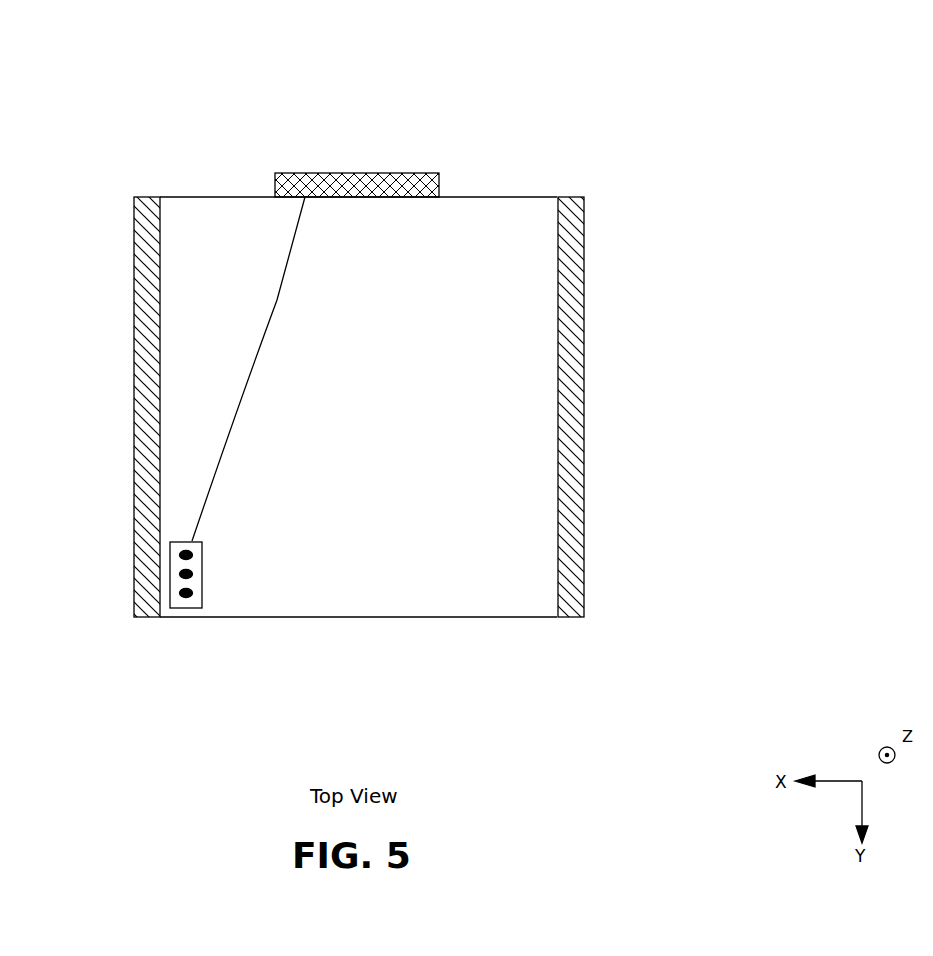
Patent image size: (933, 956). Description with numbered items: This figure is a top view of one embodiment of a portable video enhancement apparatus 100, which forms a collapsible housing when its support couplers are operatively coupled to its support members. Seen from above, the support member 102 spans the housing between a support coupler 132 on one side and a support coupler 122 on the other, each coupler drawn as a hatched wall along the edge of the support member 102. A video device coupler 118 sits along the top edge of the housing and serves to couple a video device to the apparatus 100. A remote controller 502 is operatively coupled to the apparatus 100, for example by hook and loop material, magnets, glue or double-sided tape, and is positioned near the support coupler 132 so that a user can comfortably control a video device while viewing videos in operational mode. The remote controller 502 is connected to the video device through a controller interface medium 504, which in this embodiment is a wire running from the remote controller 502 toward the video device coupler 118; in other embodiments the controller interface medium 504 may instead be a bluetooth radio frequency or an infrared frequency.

The portable video enhancement apparatus 100 is at (845, 92).
The support member 102 is at (472, 205).
The video device coupler 118 is at (330, 181).
The support coupler 122 is at (572, 488).
The support coupler 132 is at (153, 281).
The remote controller 502 is at (198, 602).
The controller interface medium 504 is at (258, 340).